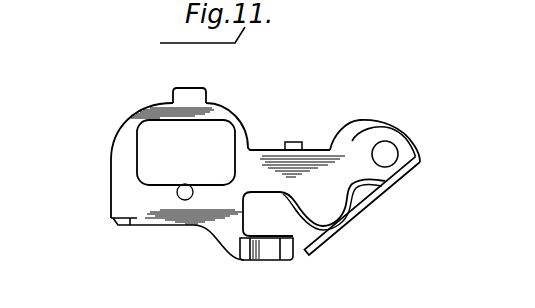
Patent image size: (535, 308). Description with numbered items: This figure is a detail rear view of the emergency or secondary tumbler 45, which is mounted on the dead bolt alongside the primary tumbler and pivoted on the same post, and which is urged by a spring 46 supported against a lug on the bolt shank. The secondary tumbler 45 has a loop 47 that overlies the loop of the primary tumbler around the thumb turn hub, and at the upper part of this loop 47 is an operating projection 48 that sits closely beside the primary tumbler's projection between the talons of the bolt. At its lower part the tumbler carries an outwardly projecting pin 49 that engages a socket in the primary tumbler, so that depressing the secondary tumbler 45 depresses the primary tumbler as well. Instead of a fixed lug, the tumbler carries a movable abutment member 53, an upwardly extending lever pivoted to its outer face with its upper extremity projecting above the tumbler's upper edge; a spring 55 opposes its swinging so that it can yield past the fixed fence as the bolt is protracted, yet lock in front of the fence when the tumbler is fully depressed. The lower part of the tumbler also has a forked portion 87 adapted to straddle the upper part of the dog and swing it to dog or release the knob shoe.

The secondary tumbler 45 is at (252, 168).
The spring 46 is at (377, 202).
The loop 47 is at (123, 158).
The operating projection 48 is at (177, 86).
The outwardly projecting pin 49 is at (183, 199).
The movable abutment member 53 is at (300, 140).
The spring 55 is at (303, 216).
The forked portion 87 is at (287, 250).